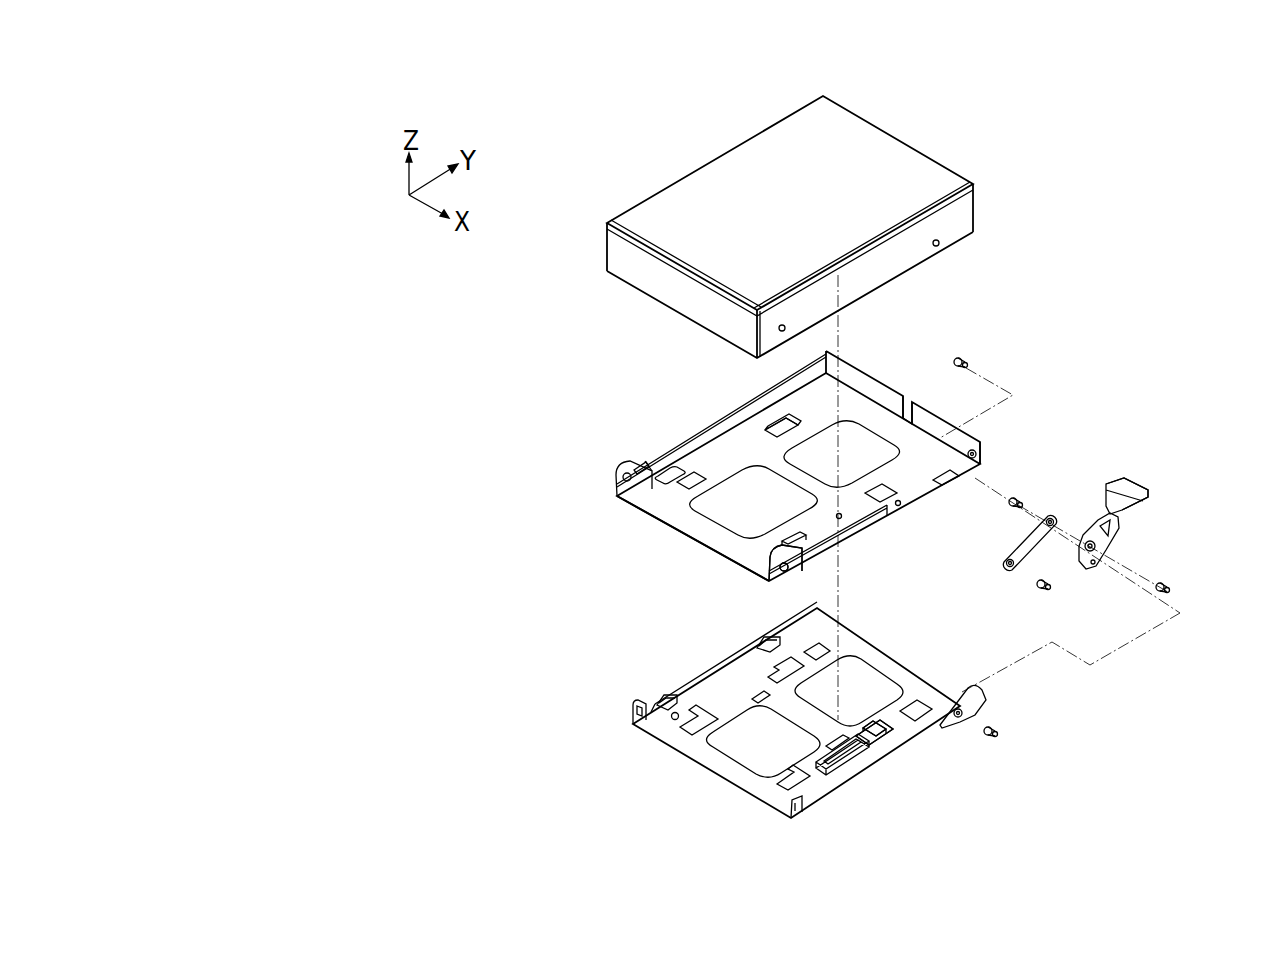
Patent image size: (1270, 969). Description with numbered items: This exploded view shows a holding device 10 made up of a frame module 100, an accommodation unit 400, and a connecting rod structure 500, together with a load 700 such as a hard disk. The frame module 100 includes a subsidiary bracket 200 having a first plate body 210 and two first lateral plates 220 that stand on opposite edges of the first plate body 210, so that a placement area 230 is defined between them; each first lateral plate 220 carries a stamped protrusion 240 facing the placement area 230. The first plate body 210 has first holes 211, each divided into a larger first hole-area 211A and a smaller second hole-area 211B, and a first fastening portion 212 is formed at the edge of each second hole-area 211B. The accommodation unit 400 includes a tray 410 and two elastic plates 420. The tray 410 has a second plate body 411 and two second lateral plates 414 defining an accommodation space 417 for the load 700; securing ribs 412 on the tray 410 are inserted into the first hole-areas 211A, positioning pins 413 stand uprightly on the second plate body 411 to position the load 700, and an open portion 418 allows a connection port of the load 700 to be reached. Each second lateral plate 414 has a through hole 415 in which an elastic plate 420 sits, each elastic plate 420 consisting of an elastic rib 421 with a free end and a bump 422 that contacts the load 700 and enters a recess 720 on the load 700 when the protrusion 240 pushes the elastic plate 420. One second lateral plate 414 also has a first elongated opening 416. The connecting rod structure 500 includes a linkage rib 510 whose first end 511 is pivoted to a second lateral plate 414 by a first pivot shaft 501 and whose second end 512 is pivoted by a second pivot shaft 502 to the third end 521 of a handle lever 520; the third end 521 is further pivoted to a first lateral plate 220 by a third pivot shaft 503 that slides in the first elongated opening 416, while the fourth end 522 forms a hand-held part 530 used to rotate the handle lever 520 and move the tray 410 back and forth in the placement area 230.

The holding device 10 is at (276, 116).
The frame module 100 is at (266, 245).
The subsidiary bracket 200 is at (556, 855).
The first plate body 210 is at (706, 760).
The first holes 211 is at (1027, 802).
The first hole-area 211A is at (968, 786).
The second hole-area 211B is at (968, 760).
The first fastening portion 212 is at (884, 724).
The first lateral plates 220 is at (792, 806).
The placement area 230 is at (960, 642).
The protrusion 240 is at (637, 706).
The accommodation unit 400 is at (472, 330).
The tray 410 is at (577, 370).
The second plate body 411 is at (683, 518).
The securing ribs 412 is at (760, 409).
The positioning pins 413 is at (760, 424).
The second lateral plates 414 is at (760, 582).
The through hole 415 is at (790, 581).
The first elongated opening 416 is at (984, 460).
The accommodation space 417 is at (862, 372).
The open portion 418 is at (911, 416).
The elastic plates 420 is at (590, 370).
The elastic rib 421 is at (649, 461).
The bump 422 is at (640, 457).
The connecting rod structure 500 is at (266, 506).
The first pivot shaft 501 is at (1040, 590).
The second pivot shaft 502 is at (1030, 478).
The third pivot shaft 503 is at (985, 343).
The linkage rib 510 is at (1042, 570).
The first end 511 is at (1006, 573).
The second end 512 is at (1058, 511).
The handle lever 520 is at (1140, 553).
The third end 521 is at (1090, 563).
The fourth end 522 is at (1163, 523).
The hand-held part 530 is at (1138, 477).
The load 700 is at (906, 146).
The recesses 720 is at (939, 245).